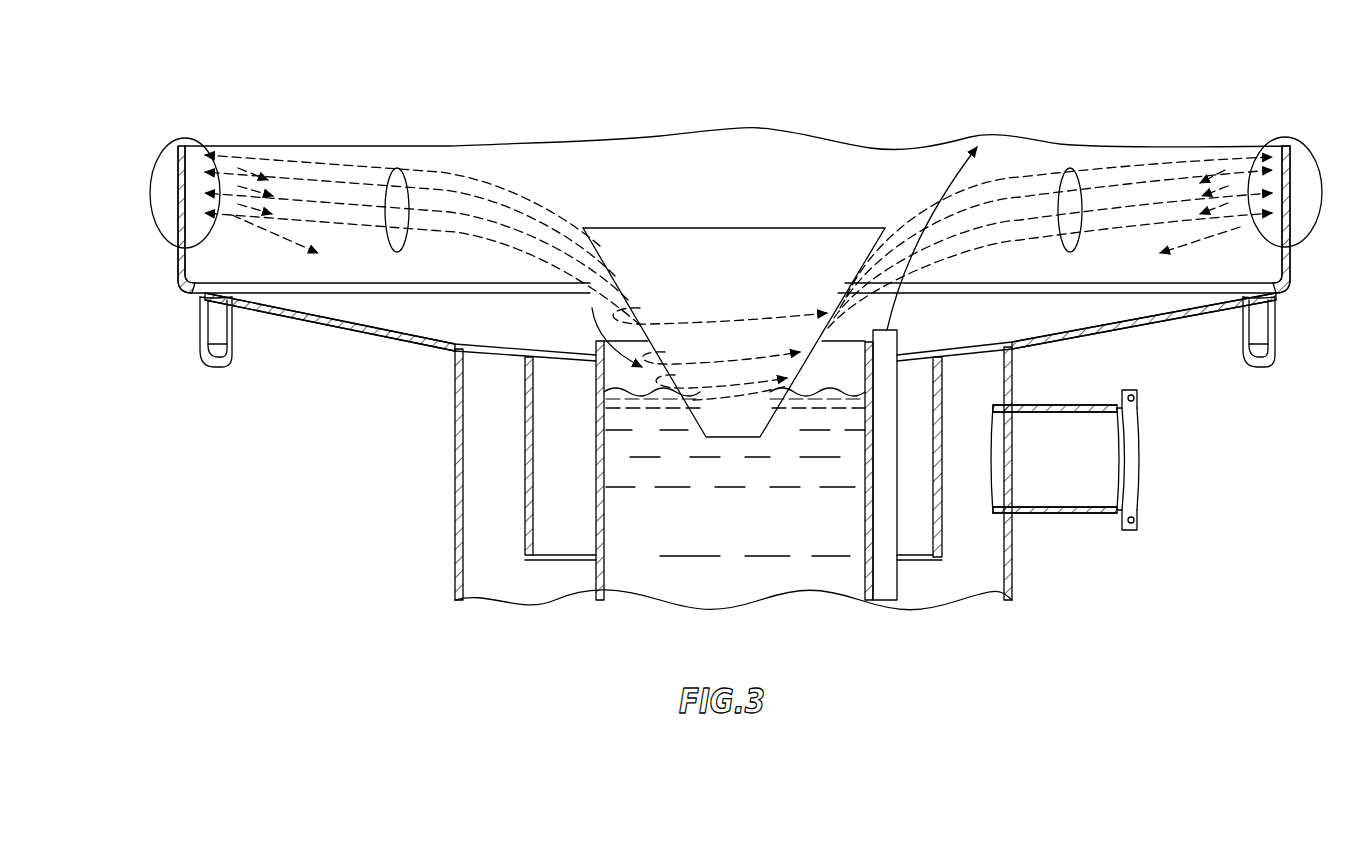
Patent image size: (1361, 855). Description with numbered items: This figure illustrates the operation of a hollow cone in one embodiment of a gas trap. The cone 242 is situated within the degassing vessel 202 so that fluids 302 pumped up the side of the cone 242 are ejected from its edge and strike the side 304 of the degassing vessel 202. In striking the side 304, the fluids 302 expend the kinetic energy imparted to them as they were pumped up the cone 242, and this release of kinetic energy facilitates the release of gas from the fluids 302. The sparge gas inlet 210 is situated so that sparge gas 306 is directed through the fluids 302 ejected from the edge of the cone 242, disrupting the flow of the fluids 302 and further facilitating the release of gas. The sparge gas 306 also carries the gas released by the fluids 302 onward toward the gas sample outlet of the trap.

The degassing vessel 202 is at (1130, 326).
The sparge gas inlet 210 is at (905, 583).
The cone 242 is at (598, 258).
The fluids 302 is at (400, 168).
The side of the degassing vessel 304 is at (200, 148).
The sparge gas 306 is at (962, 172).